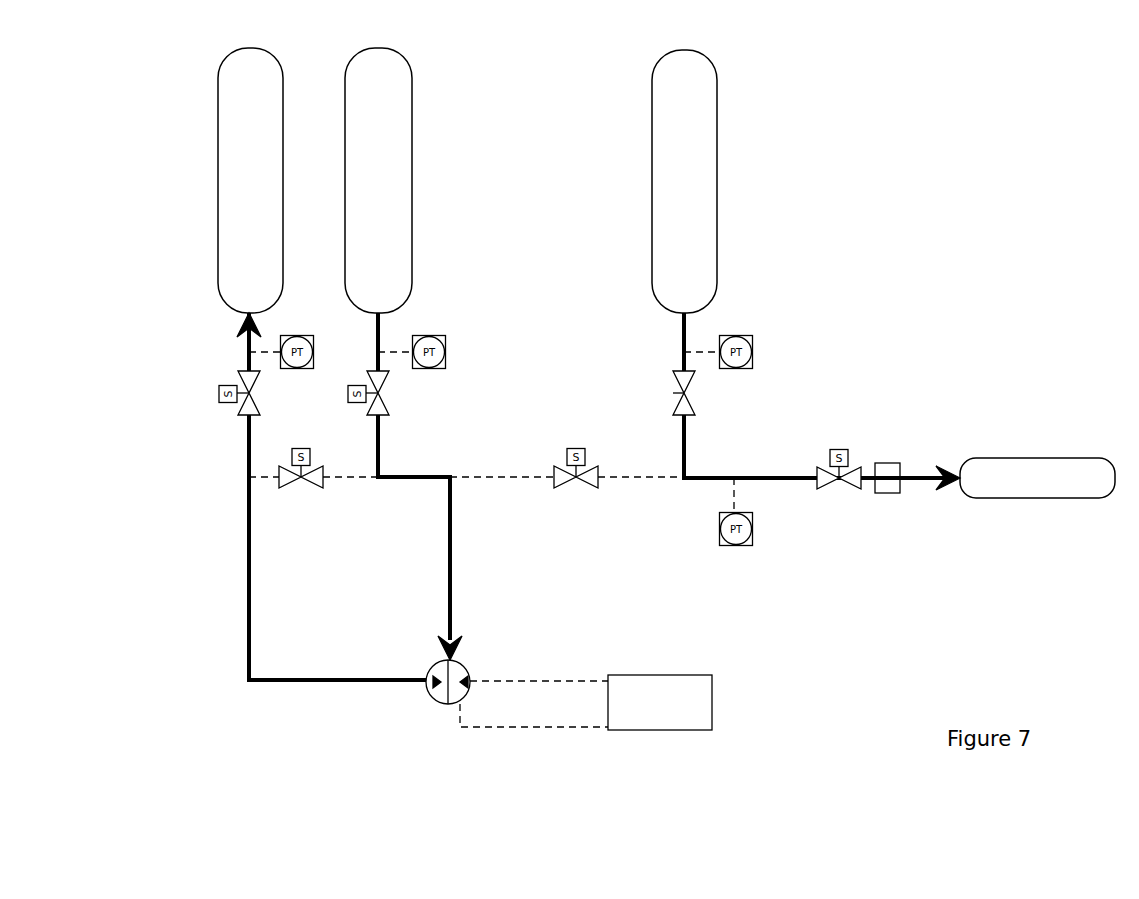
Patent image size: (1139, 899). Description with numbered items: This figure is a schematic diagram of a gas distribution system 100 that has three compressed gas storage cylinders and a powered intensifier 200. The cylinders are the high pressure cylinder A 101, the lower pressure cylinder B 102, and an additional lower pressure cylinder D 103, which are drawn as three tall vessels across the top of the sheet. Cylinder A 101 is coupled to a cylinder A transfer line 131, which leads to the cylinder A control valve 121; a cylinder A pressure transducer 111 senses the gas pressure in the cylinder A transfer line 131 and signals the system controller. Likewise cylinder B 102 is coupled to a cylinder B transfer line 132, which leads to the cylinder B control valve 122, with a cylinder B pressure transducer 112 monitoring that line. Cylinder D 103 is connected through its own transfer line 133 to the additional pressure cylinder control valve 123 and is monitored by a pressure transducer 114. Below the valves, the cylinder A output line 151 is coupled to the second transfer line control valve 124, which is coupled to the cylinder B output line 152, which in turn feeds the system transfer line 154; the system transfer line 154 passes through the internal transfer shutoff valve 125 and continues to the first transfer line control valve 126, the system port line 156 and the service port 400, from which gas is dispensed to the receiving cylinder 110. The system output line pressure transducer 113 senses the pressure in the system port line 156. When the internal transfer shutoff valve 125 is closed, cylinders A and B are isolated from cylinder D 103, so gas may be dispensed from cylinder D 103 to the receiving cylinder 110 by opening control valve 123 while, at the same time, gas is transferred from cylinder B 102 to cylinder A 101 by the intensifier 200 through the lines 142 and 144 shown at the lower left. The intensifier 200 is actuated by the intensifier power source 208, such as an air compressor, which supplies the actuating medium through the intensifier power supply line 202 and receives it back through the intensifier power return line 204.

The gas distribution system 100 is at (908, 115).
The high pressure cylinder 101 is at (236, 58).
The lower pressure cylinder 102 is at (366, 58).
The additional lower pressure cylinder 103 is at (676, 51).
The receiving cylinder 110 is at (1037, 458).
The cylinder A pressure transducer 111 is at (303, 336).
The cylinder B pressure transducer 112 is at (446, 352).
The system output line pressure transducer 113 is at (742, 546).
The pressure transducer 114 is at (753, 352).
The cylinder A control valve 121 is at (224, 388).
The cylinder B control valve 122 is at (390, 397).
The additional pressure cylinder control valve 123 is at (696, 397).
The second transfer line control valve 124 is at (307, 490).
The internal transfer shutoff valve 125 is at (562, 466).
The first transfer line control valve 126 is at (828, 489).
The cylinder A transfer line 131 is at (243, 332).
The cylinder B transfer line 132 is at (385, 334).
The tank D outlet line 133 is at (691, 338).
The supply line 142 is at (449, 574).
The return line 144 is at (249, 574).
The cylinder A output line 151 is at (265, 475).
The cylinder B output line 152 is at (418, 475).
The system transfer line 154 is at (488, 475).
The system port line 156 is at (627, 474).
The powered intensifier 200 is at (440, 705).
The intensifier power supply line 202 is at (558, 678).
The intensifier power return line 204 is at (538, 728).
The intensifier power source 208 is at (660, 674).
The service port 400 is at (888, 494).